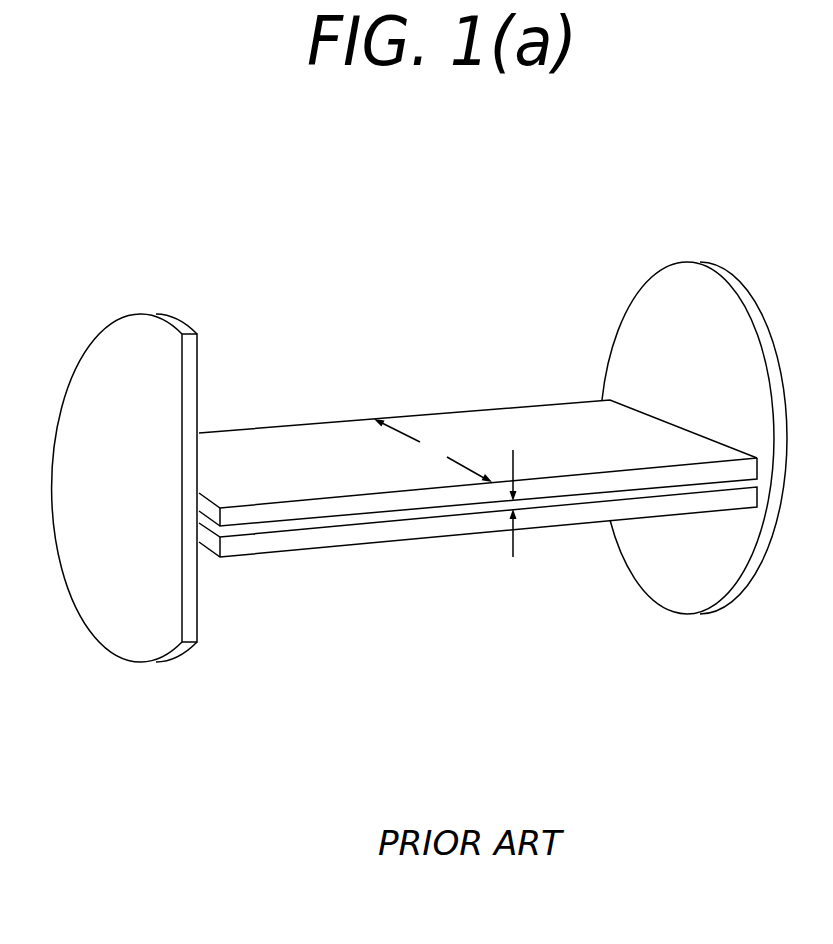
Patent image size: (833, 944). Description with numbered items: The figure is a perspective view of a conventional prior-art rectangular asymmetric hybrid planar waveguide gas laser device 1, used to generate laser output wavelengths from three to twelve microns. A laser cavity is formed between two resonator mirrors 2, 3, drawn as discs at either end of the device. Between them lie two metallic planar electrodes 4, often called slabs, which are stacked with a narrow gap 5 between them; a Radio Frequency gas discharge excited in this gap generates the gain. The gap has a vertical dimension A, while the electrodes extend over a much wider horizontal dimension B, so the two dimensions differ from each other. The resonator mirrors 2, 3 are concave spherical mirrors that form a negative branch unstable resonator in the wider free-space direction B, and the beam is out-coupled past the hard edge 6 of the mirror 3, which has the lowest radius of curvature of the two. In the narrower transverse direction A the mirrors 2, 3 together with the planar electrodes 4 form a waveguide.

The rectangular asymmetric hybrid planar waveguide gas laser device 1 is at (445, 312).
The resonator mirror 2 is at (718, 555).
The resonator mirror 3 is at (113, 343).
The planar electrodes 4 is at (347, 430).
The narrow gap 5 is at (582, 497).
The hard edge 6 is at (192, 615).
The vertical dimension A is at (514, 486).
The horizontal dimension B is at (433, 450).